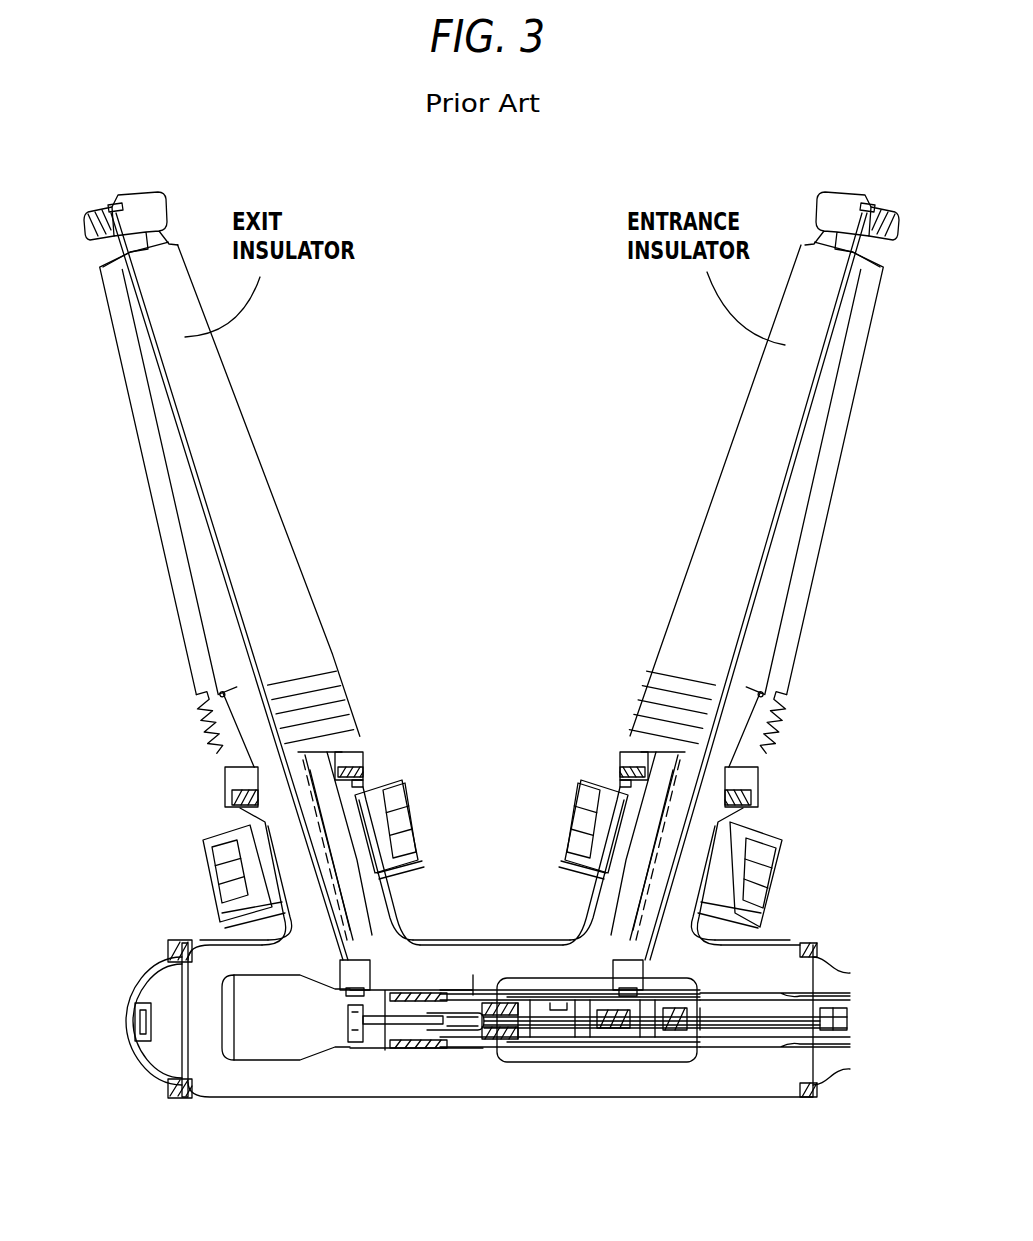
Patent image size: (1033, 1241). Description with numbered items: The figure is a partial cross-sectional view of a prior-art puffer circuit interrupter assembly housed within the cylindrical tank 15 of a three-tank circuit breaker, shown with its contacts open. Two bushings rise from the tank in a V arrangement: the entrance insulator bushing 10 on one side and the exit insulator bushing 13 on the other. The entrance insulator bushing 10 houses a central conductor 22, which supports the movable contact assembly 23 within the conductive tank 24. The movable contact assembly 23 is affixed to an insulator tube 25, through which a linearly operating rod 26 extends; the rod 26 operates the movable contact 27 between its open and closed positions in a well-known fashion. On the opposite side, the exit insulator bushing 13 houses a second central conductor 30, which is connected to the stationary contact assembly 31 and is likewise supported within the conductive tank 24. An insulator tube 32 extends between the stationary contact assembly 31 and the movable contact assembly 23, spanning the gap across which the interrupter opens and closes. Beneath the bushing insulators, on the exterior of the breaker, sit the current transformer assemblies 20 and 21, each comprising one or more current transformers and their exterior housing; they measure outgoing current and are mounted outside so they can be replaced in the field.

The entrance insulator bushing 10 is at (750, 438).
The exit insulator bushing 13 is at (235, 447).
The cylindrical tank 15 is at (489, 1108).
The current transformer assembly 20 is at (787, 840).
The current transformer assembly 21 is at (420, 797).
The central conductor 22 is at (665, 923).
The movable contact assembly 23 is at (565, 1072).
The conductive tank 24 is at (667, 1093).
The insulator tube 25 is at (728, 992).
The linearly operating rod 26 is at (758, 1028).
The movable contact 27 is at (540, 1000).
The central conductor 30 is at (338, 920).
The stationary contact assembly 31 is at (386, 1082).
The insulator tube 32 is at (473, 995).